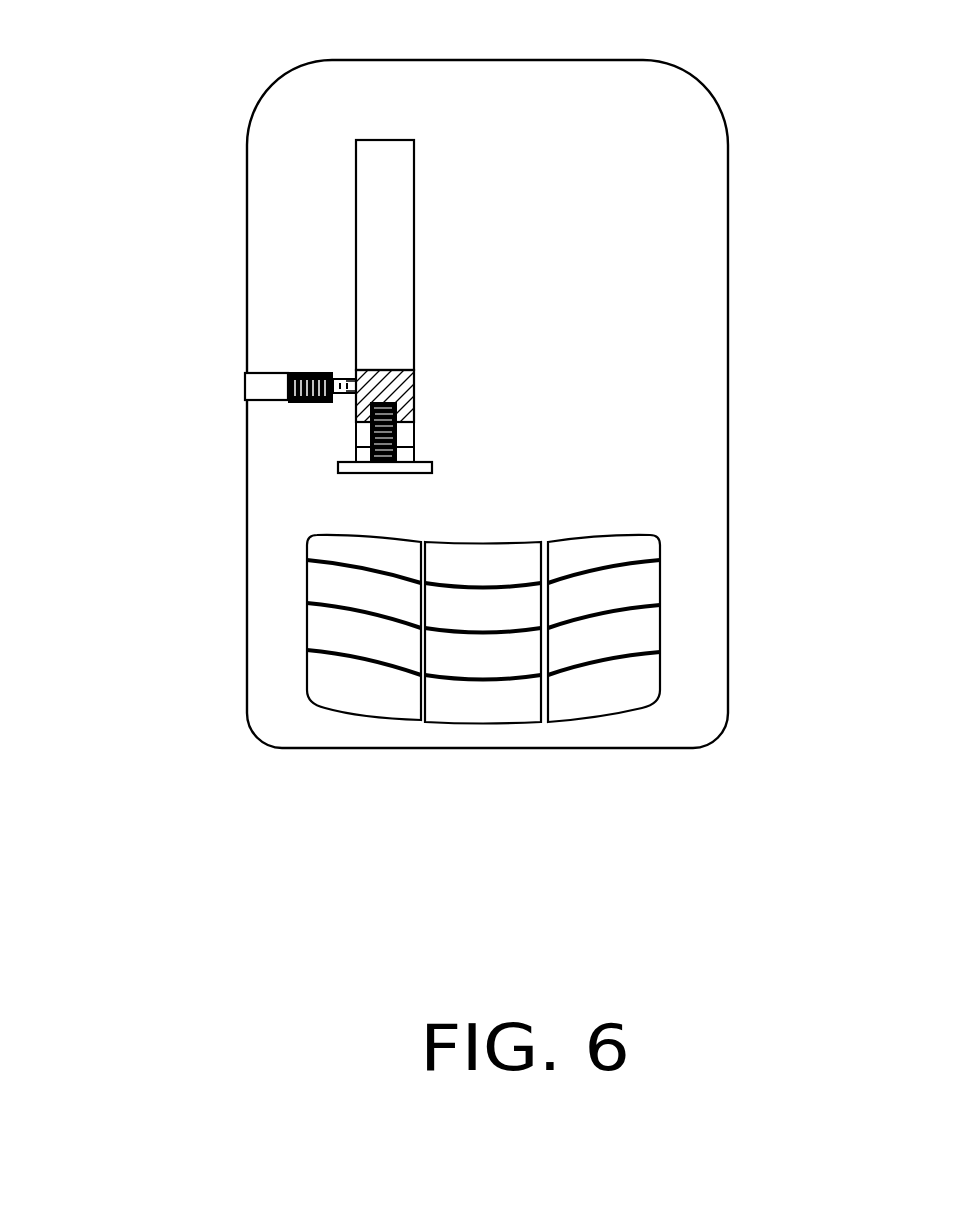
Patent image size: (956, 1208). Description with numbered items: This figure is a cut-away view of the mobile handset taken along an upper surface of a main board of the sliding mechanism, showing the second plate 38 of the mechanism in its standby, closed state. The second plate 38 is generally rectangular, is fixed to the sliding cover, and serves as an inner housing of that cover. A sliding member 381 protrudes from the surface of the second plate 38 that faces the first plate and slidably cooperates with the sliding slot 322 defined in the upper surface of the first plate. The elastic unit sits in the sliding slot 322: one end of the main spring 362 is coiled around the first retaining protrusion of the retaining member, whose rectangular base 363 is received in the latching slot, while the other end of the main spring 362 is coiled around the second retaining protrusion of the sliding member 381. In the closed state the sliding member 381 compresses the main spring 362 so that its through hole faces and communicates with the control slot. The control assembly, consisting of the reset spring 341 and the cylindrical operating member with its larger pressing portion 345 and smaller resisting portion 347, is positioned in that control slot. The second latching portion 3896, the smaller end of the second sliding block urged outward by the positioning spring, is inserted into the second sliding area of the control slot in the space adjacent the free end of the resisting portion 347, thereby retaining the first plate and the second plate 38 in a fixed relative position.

The second plate 38 is at (670, 293).
The sliding member 381 is at (373, 370).
The sliding slot 322 is at (382, 185).
The resisting portion 347 is at (342, 372).
The reset spring 341 is at (310, 372).
The pressing portion 345 is at (256, 389).
The second latching portion 3896 is at (350, 394).
The main spring 362 is at (367, 437).
The base 363 is at (365, 457).